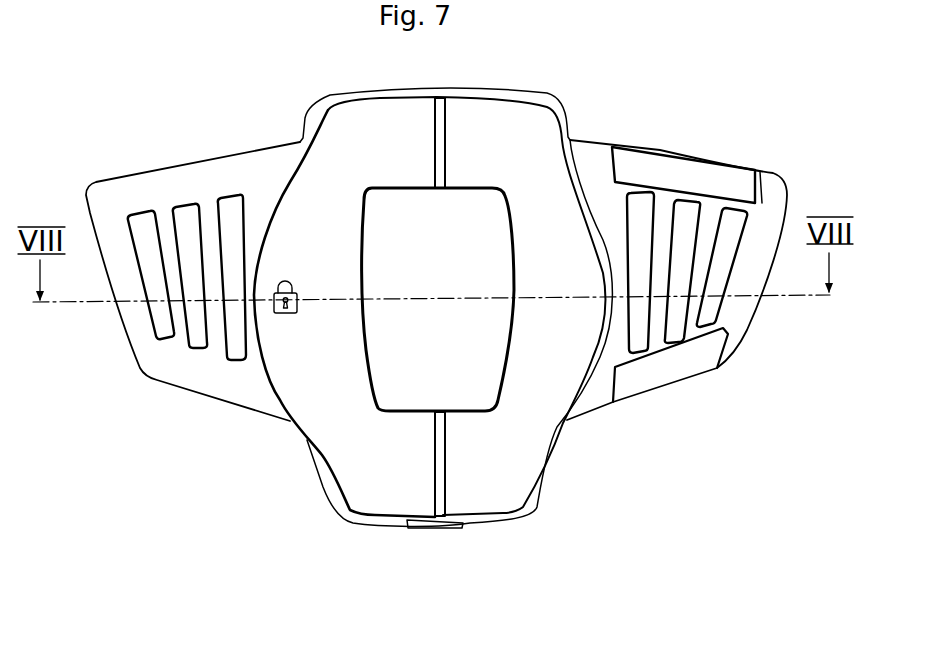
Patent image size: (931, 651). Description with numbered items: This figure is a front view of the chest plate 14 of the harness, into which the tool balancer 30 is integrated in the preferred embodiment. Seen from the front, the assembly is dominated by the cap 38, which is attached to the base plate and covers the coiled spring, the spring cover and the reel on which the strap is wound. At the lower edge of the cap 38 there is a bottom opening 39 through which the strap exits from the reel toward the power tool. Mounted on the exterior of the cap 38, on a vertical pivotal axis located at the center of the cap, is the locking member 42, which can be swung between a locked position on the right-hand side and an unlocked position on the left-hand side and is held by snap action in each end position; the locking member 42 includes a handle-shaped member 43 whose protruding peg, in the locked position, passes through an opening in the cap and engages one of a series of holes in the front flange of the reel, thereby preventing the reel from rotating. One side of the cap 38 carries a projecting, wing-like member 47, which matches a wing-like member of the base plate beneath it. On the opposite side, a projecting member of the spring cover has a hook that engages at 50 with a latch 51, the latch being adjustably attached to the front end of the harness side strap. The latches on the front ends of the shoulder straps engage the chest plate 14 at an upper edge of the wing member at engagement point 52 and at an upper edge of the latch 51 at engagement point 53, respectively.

The chest plate 14 is at (152, 381).
The tool balancer 30 is at (570, 107).
The cap 38 is at (513, 460).
The bottom opening 39 is at (409, 529).
The locking member 42 is at (296, 433).
The handle-shaped member 43 is at (300, 385).
The wing-like member 47 is at (110, 190).
The engagement point of hook 50 is at (757, 313).
The latch 51 is at (773, 200).
The engagement point 52 is at (218, 152).
The engagement point 53 is at (720, 153).